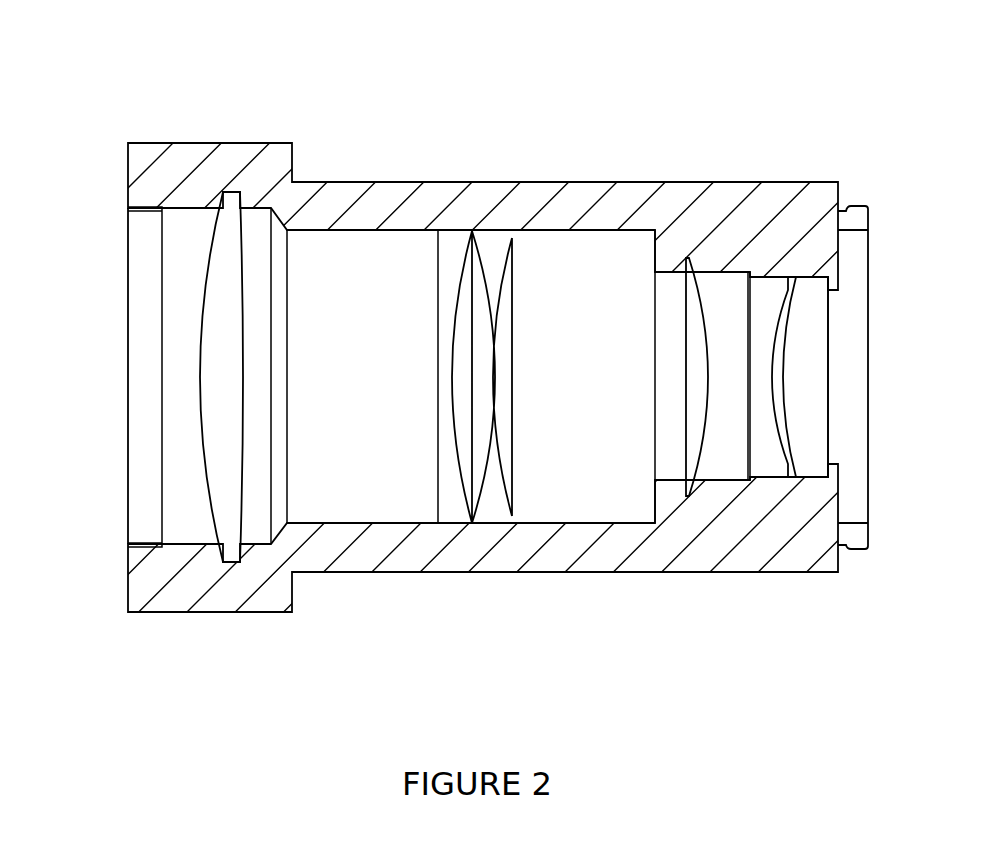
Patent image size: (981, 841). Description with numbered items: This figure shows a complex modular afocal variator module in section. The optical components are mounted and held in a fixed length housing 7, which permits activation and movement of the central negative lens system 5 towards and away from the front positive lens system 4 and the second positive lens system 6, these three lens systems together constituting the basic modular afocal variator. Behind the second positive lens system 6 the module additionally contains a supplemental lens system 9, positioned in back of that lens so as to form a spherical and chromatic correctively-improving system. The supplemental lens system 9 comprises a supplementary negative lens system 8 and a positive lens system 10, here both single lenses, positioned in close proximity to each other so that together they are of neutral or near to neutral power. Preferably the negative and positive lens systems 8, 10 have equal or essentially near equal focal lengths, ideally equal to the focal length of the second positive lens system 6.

The front positive lens system 4 is at (200, 377).
The central negative lens system 5 is at (494, 377).
The second positive lens system 6 is at (695, 377).
The fixed length housing 7 is at (335, 202).
The supplementary negative lens system 8 is at (762, 377).
The supplemental lens system 9 is at (740, 348).
The positive lens system 10 is at (810, 377).